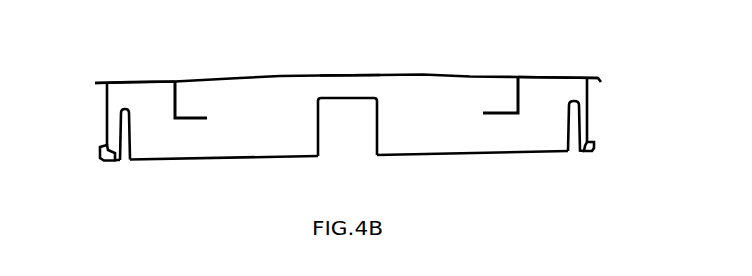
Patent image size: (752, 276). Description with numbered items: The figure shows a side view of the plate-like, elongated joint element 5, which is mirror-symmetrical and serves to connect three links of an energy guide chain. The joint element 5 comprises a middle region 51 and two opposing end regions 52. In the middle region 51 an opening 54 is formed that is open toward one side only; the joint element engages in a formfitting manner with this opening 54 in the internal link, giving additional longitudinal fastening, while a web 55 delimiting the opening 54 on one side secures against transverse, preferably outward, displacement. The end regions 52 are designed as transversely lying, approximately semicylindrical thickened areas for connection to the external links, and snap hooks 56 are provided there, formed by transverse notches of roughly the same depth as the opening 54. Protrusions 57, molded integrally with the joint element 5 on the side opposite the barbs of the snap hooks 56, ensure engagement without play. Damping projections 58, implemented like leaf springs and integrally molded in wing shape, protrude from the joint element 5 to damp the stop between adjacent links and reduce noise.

The joint element 5 is at (628, 55).
The middle region 51 is at (316, 61).
The end regions 52 is at (135, 76).
The opening 54 is at (350, 143).
The web 55 is at (358, 87).
The snap hooks 56 is at (107, 133).
The protrusions 57 is at (95, 88).
The damping projections 58 is at (187, 100).